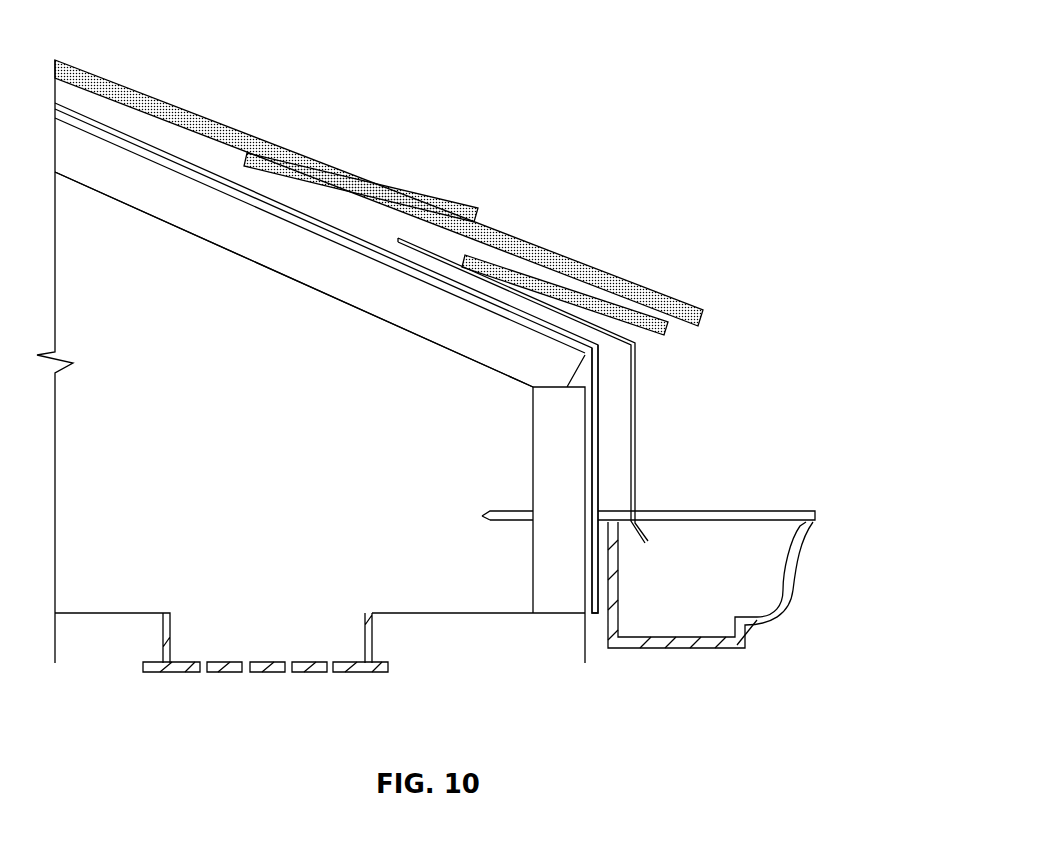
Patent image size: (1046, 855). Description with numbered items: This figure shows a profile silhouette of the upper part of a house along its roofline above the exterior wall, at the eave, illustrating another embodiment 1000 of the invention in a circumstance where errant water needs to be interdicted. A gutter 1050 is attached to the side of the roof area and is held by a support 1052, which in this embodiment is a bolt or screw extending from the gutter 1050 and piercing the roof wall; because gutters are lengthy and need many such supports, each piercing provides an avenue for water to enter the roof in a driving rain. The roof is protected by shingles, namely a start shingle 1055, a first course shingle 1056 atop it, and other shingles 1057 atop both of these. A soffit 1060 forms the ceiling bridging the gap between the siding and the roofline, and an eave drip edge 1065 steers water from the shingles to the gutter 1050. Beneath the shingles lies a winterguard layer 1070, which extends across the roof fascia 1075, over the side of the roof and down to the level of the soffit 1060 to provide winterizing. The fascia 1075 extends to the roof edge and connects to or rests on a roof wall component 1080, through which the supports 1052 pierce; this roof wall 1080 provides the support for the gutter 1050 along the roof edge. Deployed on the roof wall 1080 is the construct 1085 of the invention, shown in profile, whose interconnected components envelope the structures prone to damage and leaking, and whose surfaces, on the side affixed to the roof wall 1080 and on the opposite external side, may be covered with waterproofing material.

The illustrative embodiment 1000 is at (652, 36).
The gutter 1050 is at (795, 572).
The support 1052 is at (490, 515).
The start shingle 1055 is at (665, 331).
The first course shingle 1056 is at (573, 262).
The other shingles 1057 is at (342, 177).
The soffit 1060 is at (373, 705).
The eave drip edge 1065 is at (636, 440).
The winterguard layer 1070 is at (148, 145).
The roof fascia 1075 is at (270, 268).
The roof wall component 1080 is at (533, 455).
The construct 1085 is at (598, 494).